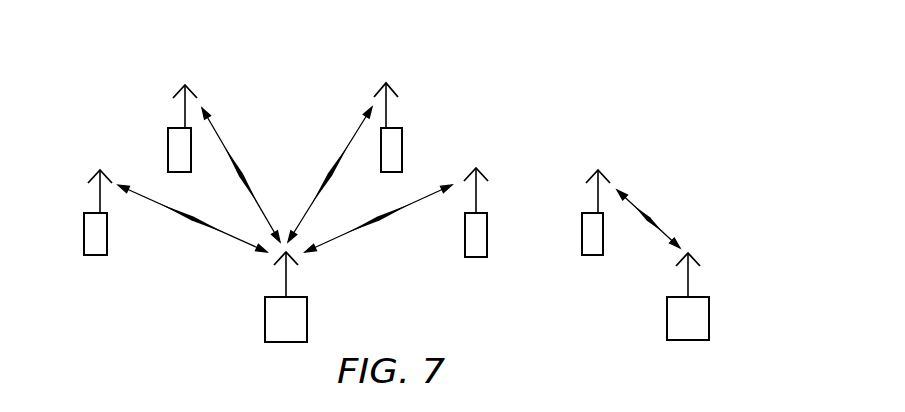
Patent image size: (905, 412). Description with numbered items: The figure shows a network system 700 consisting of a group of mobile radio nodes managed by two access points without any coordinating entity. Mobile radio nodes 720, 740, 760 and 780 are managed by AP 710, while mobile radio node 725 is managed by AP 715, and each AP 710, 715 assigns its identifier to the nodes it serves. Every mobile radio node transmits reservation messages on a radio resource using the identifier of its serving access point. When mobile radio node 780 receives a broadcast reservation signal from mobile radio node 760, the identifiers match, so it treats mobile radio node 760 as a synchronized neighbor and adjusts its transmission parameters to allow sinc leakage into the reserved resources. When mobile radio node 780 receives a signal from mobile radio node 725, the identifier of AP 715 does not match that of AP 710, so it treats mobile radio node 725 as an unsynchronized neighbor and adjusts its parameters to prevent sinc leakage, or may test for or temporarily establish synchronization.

The network system 700 is at (588, 79).
The AP 710 is at (265, 322).
The AP 715 is at (709, 319).
The mobile radio node 720 is at (84, 232).
The mobile radio node 725 is at (592, 255).
The mobile radio node 740 is at (168, 147).
The mobile radio node 760 is at (402, 150).
The mobile radio node 780 is at (487, 233).